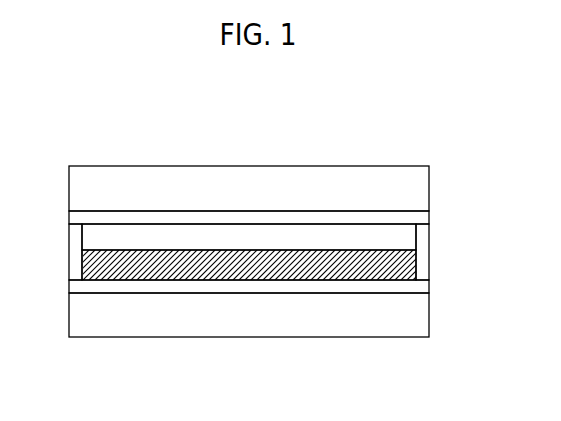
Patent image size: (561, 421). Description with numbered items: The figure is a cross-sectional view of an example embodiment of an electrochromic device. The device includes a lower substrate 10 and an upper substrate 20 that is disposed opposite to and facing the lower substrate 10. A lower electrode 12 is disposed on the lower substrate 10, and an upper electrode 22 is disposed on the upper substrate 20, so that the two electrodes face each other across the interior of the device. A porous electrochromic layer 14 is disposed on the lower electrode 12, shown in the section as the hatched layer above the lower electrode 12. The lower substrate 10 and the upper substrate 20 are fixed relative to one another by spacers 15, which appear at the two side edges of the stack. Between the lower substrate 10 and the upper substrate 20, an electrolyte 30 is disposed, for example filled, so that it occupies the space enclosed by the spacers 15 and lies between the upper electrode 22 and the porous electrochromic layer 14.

The lower substrate 10 is at (332, 318).
The lower electrode 12 is at (267, 287).
The porous electrochromic layer 14 is at (203, 262).
The spacers 15 is at (78, 254).
The upper substrate 20 is at (313, 183).
The upper electrode 22 is at (240, 218).
The electrolyte 30 is at (158, 235).